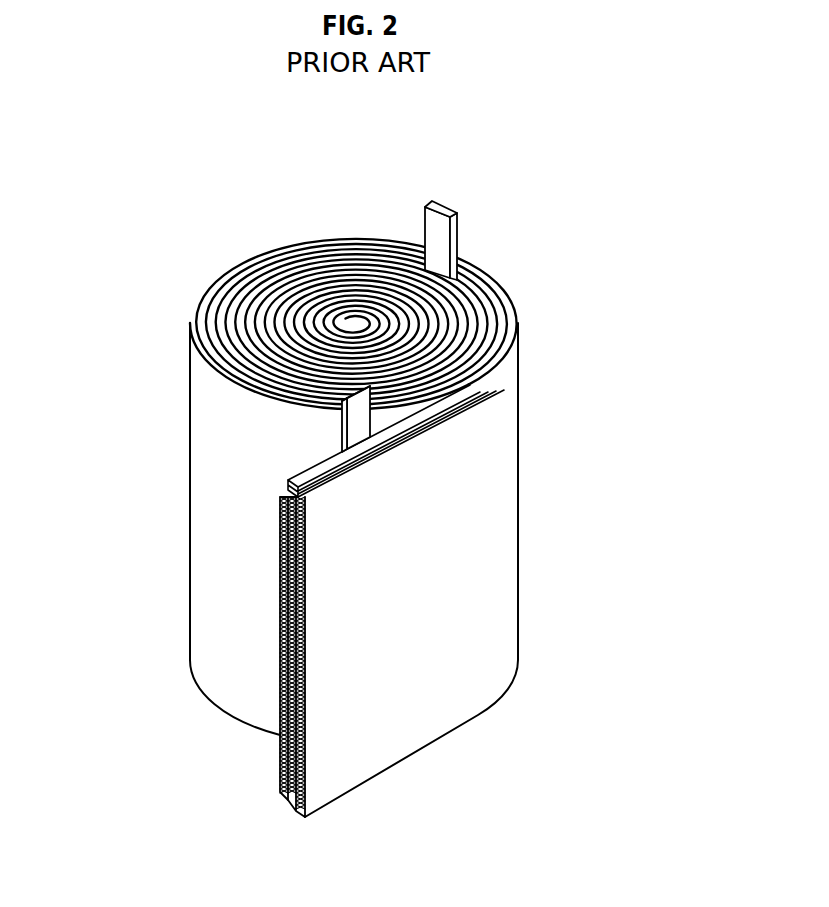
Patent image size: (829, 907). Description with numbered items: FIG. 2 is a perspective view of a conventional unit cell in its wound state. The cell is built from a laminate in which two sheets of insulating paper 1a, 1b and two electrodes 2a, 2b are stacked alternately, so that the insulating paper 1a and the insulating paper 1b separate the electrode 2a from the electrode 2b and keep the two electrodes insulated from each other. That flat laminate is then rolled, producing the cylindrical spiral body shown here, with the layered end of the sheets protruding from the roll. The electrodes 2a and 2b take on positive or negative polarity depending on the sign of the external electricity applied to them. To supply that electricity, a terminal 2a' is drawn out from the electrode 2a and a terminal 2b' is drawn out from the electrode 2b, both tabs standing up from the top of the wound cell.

The sheet of insulating paper 1a is at (323, 461).
The sheet of insulating paper 1b is at (297, 480).
The electrode 2a is at (344, 657).
The electrode 2b is at (216, 648).
The terminal 2a' is at (467, 444).
The terminal 2b' is at (464, 201).